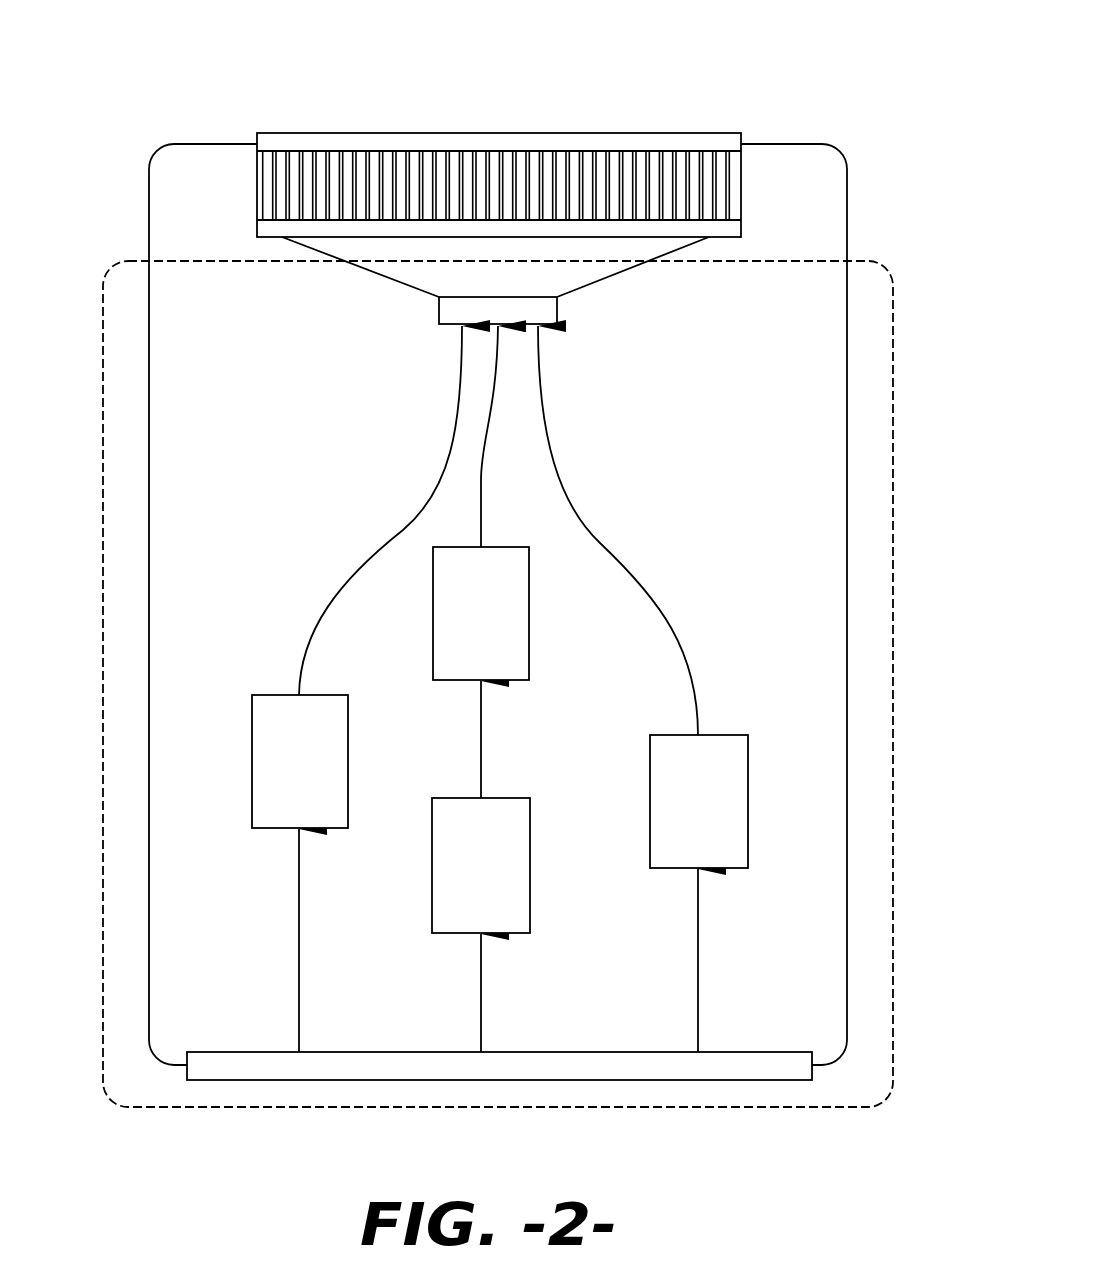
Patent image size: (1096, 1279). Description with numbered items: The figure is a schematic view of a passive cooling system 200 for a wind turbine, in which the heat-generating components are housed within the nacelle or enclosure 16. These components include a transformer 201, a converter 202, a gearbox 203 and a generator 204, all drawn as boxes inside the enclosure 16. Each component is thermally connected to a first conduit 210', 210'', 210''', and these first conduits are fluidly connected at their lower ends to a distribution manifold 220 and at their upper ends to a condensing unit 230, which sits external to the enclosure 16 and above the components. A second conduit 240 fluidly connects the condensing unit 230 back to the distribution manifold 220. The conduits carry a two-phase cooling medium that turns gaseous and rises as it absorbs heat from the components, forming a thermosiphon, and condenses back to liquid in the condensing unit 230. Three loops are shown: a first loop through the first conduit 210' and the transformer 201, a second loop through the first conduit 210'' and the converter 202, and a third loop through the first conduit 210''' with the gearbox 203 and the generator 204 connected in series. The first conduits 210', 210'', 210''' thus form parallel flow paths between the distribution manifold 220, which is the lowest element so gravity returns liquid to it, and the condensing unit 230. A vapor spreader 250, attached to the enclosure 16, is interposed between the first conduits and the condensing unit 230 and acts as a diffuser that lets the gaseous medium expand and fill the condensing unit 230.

The nacelle (enclosure) 16 is at (103, 405).
The passive cooling system 200 is at (715, 93).
The condensing unit 230 is at (741, 170).
The second conduit 240 is at (149, 413).
The vapor spreader 250 is at (577, 275).
The distribution manifold 220 is at (723, 1067).
The transformer 201 is at (327, 777).
The converter 202 is at (727, 817).
The gearbox 203 is at (510, 880).
The generator 204 is at (511, 627).
The first conduit 210' is at (347, 689).
The first conduit 210'' is at (660, 689).
The first conduit 210''' is at (527, 689).